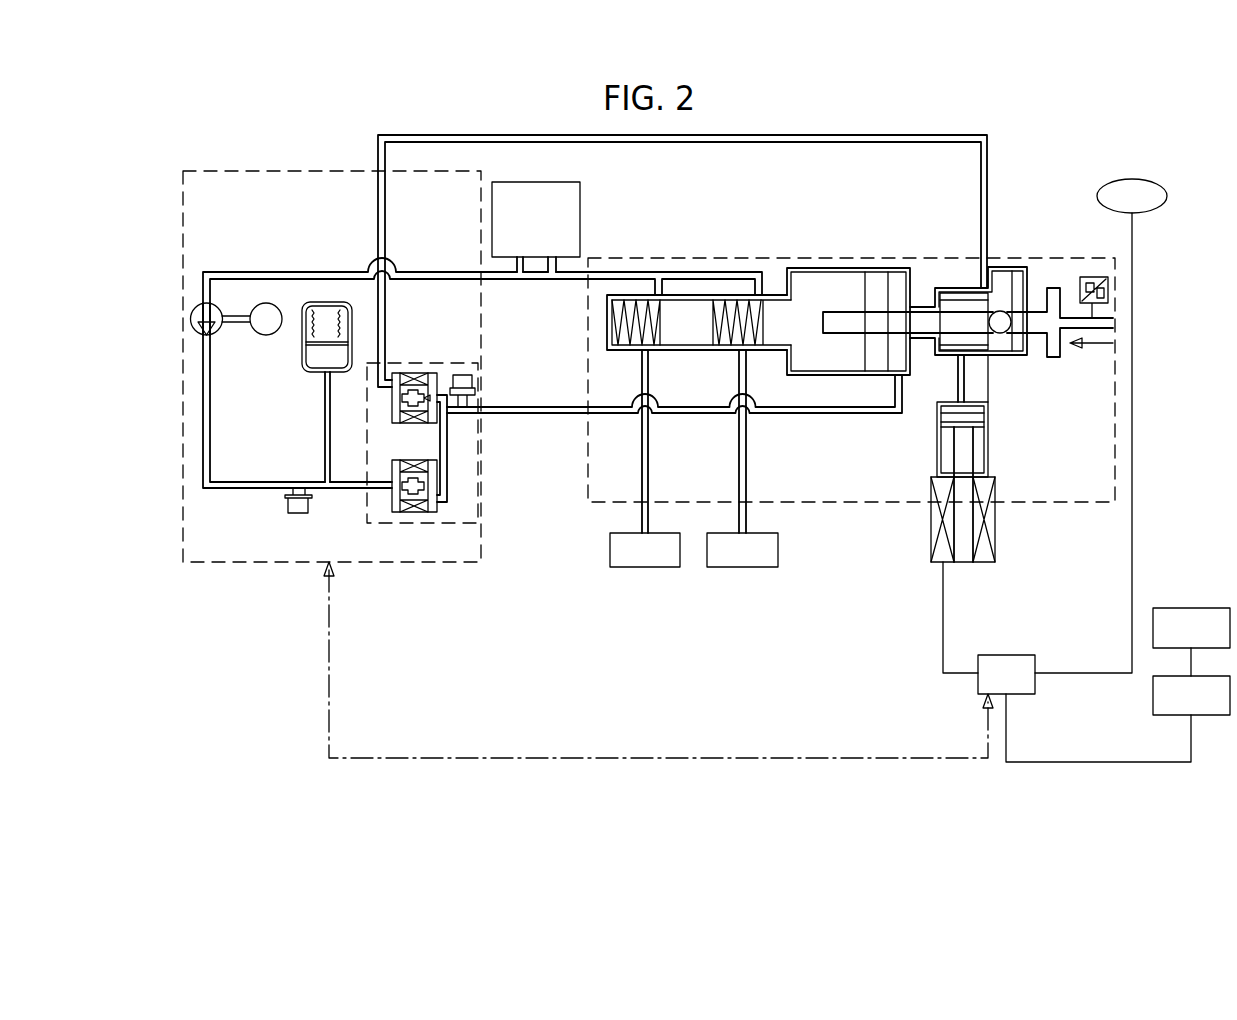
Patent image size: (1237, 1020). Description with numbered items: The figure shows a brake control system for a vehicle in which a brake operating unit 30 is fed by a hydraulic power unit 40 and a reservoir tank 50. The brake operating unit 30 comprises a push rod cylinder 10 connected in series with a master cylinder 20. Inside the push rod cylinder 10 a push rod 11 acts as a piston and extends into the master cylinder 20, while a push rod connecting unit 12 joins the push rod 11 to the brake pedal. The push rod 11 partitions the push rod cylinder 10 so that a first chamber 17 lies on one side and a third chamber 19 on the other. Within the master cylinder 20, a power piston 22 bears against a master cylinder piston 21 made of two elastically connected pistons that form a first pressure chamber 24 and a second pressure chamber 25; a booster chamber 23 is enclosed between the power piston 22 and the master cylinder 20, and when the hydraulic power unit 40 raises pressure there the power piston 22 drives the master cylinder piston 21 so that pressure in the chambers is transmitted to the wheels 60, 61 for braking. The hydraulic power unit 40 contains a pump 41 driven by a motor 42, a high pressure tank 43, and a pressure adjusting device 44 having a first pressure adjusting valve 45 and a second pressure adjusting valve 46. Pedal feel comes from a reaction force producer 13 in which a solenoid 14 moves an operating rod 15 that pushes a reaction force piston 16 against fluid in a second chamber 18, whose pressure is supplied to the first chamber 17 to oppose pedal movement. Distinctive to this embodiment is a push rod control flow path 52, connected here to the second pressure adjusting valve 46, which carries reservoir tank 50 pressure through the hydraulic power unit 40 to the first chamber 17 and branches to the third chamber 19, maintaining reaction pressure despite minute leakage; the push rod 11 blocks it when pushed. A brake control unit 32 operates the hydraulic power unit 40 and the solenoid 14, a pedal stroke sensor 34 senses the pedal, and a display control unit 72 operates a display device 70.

The push rod cylinder 10 is at (1005, 288).
The push rod 11 is at (953, 318).
The push rod connecting unit 12 is at (1037, 318).
The reaction force producer 13 is at (988, 450).
The solenoid 14 is at (988, 565).
The operating rod 15 is at (963, 565).
The reaction force piston 16 is at (940, 422).
The first chamber 17 is at (970, 300).
The second chamber 18 is at (940, 412).
The third chamber 19 is at (1010, 355).
The master cylinder 20 is at (810, 268).
The master cylinder piston 21 is at (780, 337).
The power piston 22 is at (876, 280).
The booster chamber 23 is at (898, 285).
The first pressure chamber 24 is at (737, 330).
The second pressure chamber 25 is at (636, 330).
The brake operating unit 30 is at (1075, 260).
The brake control unit 32 is at (978, 685).
The pedal stroke sensor 34 is at (1132, 179).
The hydraulic power unit 40 is at (248, 562).
The pump 41 is at (204, 303).
The motor 42 is at (266, 335).
The high pressure tank 43 is at (318, 372).
The pressure adjusting device 44 is at (403, 463).
The first pressure adjusting valve 45 is at (392, 500).
The second pressure adjusting valve 46 is at (412, 373).
The reservoir tank 50 is at (580, 195).
The push rod control flow path 52 is at (836, 135).
The wheel 60 is at (645, 567).
The wheel 61 is at (742, 567).
The display device 70 is at (1185, 608).
The display control unit 72 is at (1153, 703).